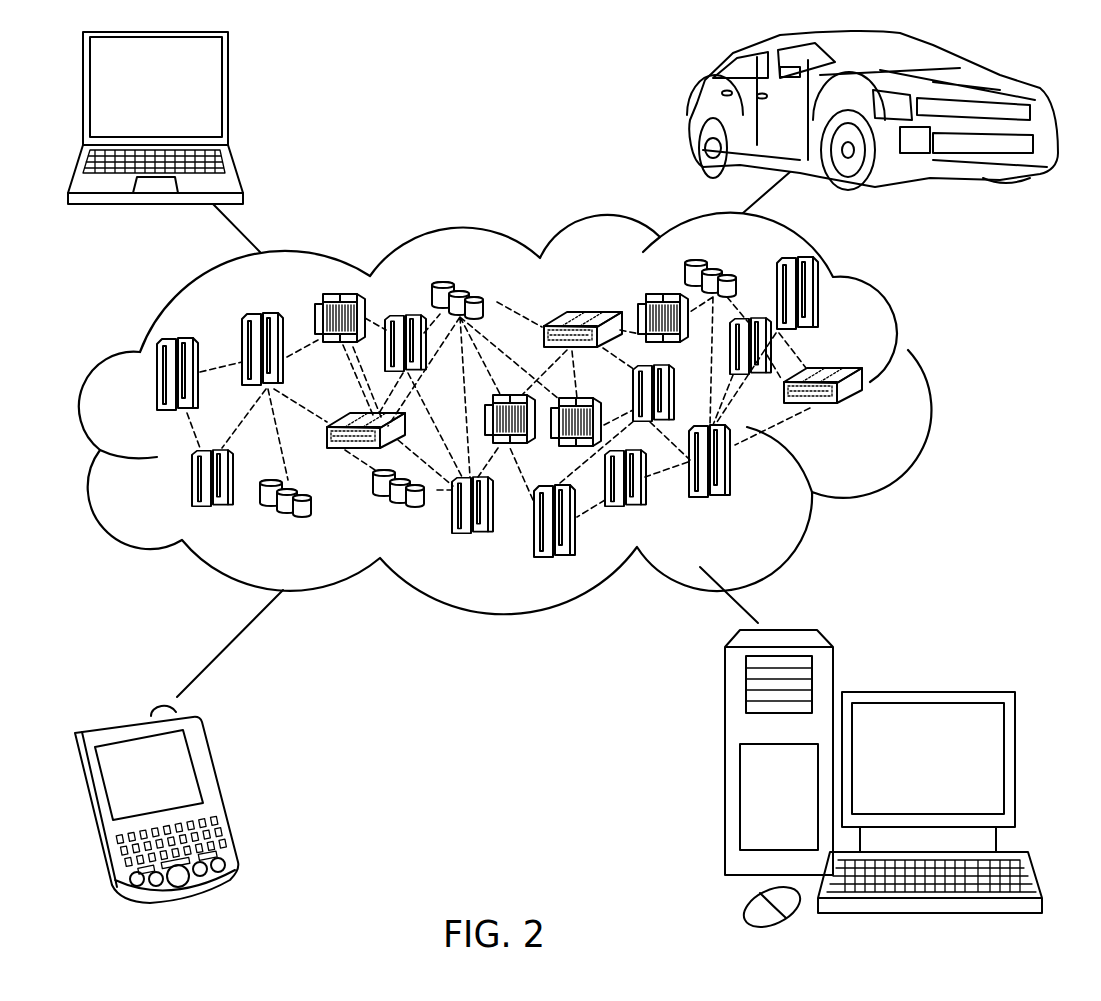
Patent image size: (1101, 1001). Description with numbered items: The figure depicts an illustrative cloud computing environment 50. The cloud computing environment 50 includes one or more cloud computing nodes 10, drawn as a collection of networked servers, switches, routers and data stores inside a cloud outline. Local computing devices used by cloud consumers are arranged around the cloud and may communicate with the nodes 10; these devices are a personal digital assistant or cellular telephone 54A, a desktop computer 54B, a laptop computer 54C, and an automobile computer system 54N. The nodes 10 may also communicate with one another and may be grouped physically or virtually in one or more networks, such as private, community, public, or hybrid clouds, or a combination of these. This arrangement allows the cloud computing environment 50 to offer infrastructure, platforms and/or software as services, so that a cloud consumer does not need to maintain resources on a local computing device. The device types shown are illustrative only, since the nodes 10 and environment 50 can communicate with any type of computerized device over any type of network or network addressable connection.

The cloud computing environment 50 is at (923, 384).
The cloud computing nodes 10 is at (862, 418).
The personal digital assistant (PDA) or cellular telephone 54A is at (217, 792).
The desktop computer 54B is at (923, 692).
The laptop computer 54C is at (229, 96).
The automobile computer system 54N is at (690, 110).